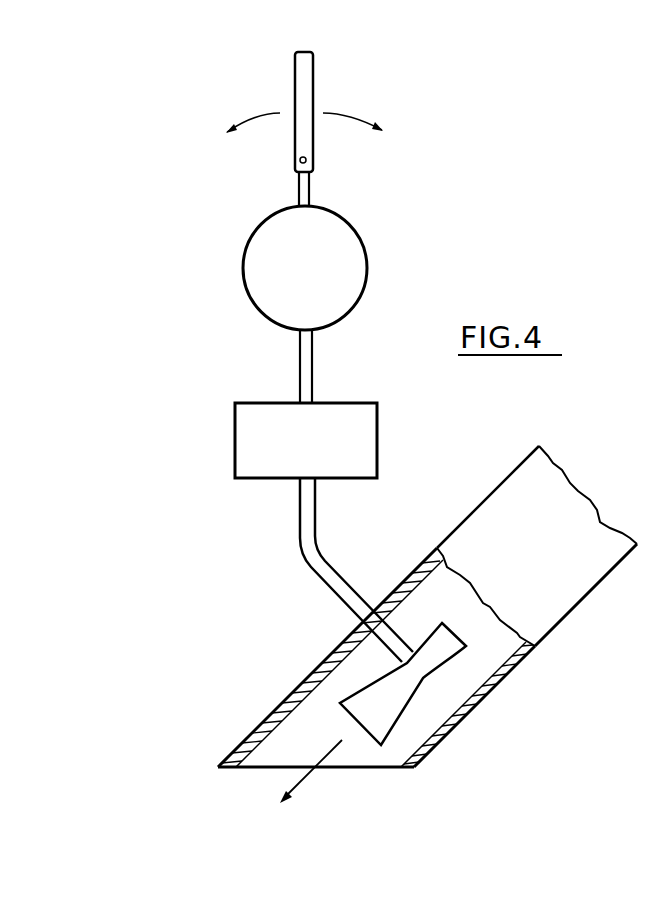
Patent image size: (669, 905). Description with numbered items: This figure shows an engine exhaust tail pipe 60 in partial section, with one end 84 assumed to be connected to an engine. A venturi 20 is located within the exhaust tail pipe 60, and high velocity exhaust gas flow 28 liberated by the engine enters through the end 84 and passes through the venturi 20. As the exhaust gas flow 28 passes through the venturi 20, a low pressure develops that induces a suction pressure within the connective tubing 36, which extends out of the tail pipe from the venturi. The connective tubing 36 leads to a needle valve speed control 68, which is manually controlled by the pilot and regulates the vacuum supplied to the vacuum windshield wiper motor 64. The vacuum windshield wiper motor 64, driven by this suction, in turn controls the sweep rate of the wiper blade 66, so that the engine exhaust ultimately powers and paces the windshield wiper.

The wiper blade 66 is at (313, 76).
The vacuum windshield wiper motor 64 is at (247, 241).
The needle valve speed control 68 is at (347, 403).
The connective tubing 36 is at (299, 530).
The exhaust tail pipe 60 is at (487, 498).
The end 84 is at (563, 470).
The venturi 20 is at (418, 684).
The exhaust gas flow 28 is at (308, 776).